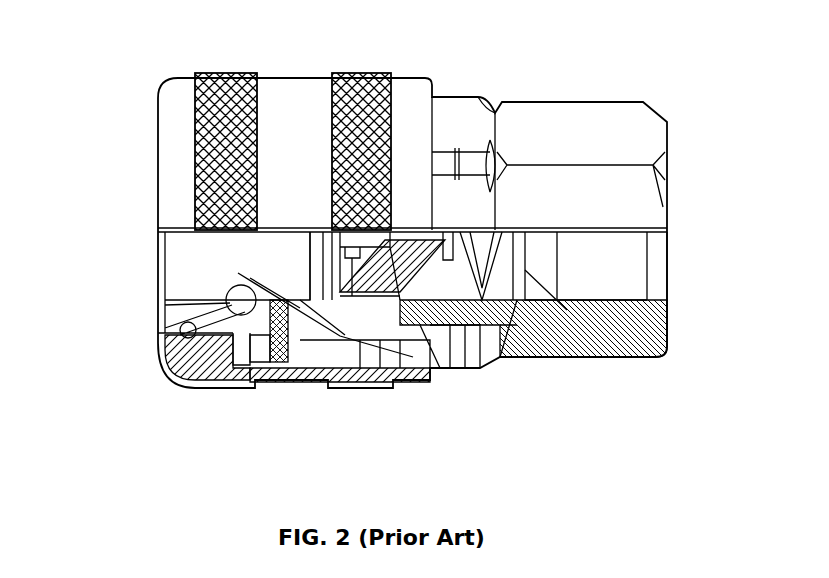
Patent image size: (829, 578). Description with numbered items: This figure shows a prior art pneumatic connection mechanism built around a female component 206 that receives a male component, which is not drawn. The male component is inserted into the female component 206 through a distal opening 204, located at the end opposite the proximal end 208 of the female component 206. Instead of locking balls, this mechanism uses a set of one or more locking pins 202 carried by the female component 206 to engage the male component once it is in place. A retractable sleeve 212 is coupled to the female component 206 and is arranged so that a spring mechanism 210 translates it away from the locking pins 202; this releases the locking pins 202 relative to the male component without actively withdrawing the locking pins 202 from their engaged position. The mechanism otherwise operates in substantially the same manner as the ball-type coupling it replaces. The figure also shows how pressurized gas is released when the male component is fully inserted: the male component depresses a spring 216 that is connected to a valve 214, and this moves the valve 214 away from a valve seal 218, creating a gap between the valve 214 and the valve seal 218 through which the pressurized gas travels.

The locking pins 202 is at (233, 388).
The distal opening 204 is at (116, 243).
The female component 206 is at (472, 97).
The proximal end 208 is at (575, 102).
The spring mechanism 210 is at (318, 362).
The retractable sleeve 212 is at (287, 78).
The valve 214 is at (500, 340).
The spring 216 is at (590, 340).
The valve seal 218 is at (430, 387).